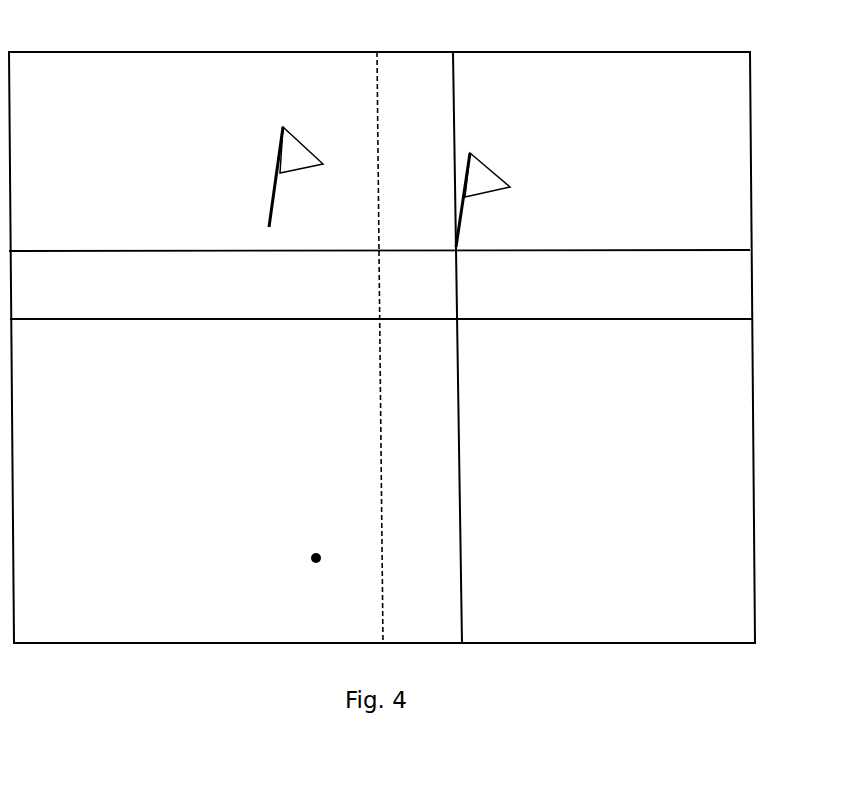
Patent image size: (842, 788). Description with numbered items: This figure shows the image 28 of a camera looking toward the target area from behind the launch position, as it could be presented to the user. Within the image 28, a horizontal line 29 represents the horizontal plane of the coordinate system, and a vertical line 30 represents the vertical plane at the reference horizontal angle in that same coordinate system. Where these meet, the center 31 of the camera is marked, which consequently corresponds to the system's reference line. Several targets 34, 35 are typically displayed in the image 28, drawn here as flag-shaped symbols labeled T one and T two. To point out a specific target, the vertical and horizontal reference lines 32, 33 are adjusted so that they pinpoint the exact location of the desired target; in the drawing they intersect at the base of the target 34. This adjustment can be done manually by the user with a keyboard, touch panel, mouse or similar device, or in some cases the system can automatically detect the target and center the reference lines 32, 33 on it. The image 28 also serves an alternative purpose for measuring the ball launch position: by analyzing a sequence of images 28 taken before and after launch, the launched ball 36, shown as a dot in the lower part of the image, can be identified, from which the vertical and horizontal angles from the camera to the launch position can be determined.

The image 28 is at (667, 52).
The horizontal line 29 is at (628, 319).
The vertical line 30 is at (378, 134).
The center of the camera 31 is at (379, 316).
The horizontal reference line 32 is at (668, 250).
The vertical reference line 33 is at (455, 120).
The target 34 is at (458, 246).
The target 35 is at (271, 217).
The launched ball 36 is at (320, 554).